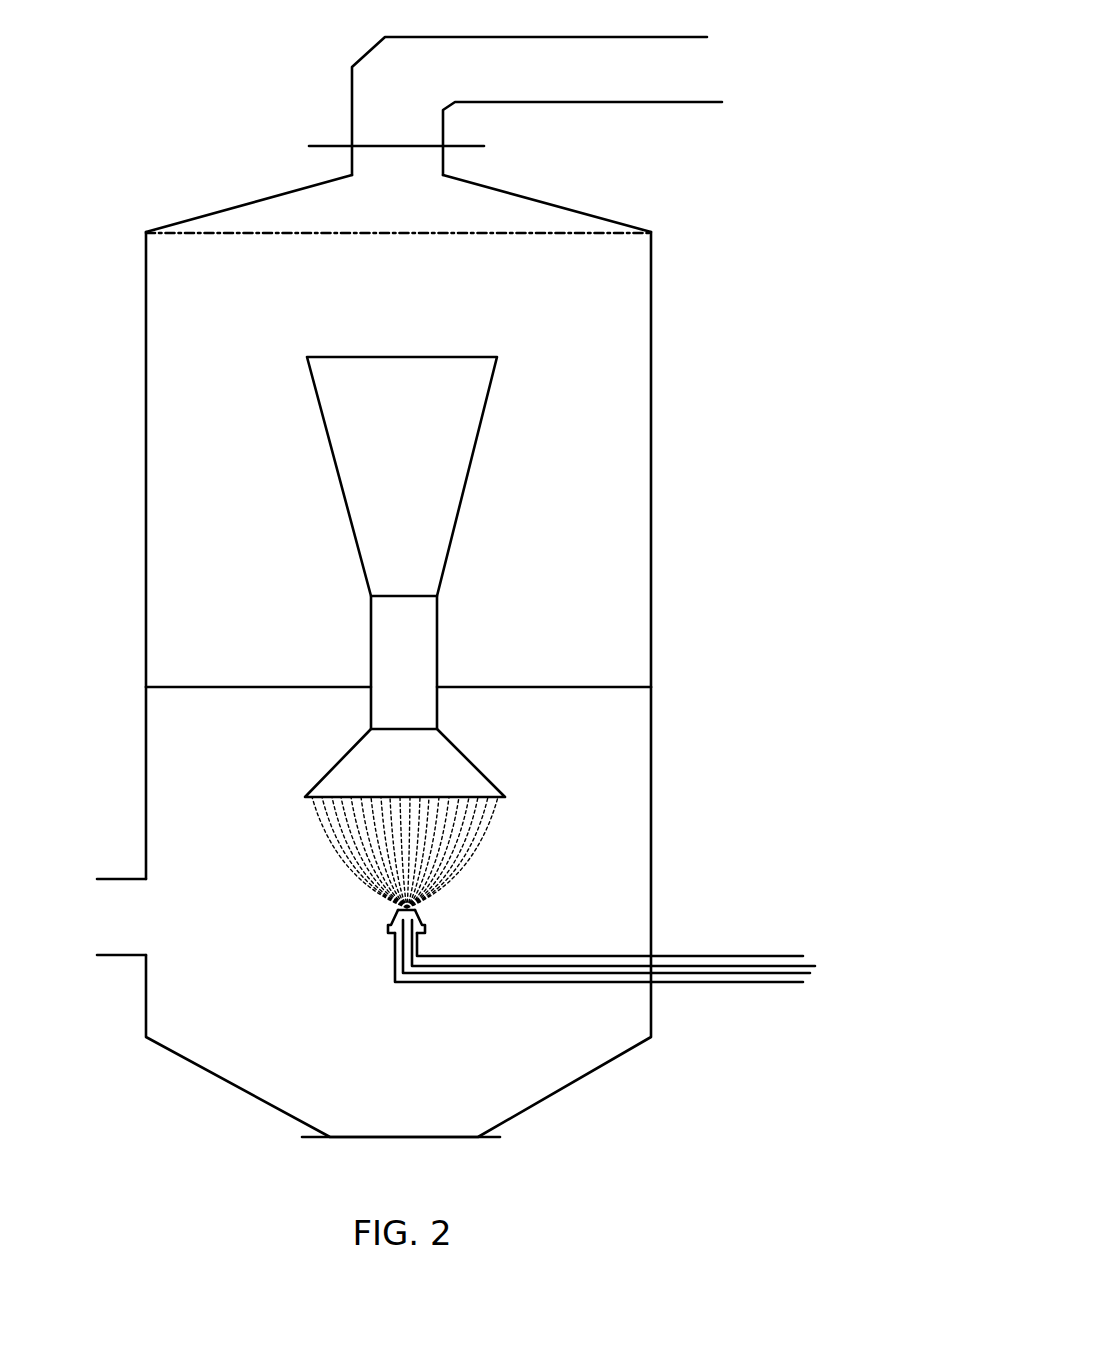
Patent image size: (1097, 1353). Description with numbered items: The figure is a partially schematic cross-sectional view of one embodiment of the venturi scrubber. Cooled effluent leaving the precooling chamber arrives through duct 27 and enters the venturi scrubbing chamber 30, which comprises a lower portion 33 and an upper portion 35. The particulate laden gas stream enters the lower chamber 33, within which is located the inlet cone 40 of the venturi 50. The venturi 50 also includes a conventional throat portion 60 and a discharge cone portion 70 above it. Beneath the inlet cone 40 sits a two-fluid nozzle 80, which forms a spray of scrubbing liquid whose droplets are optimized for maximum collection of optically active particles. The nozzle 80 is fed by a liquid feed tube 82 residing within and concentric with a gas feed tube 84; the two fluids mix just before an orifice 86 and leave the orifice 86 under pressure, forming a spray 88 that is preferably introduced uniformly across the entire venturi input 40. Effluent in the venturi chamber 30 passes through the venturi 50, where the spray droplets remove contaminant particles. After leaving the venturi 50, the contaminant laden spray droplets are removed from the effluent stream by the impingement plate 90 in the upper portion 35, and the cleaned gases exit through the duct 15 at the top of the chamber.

The duct 15 is at (570, 85).
The duct 27 is at (108, 924).
The venturi scrubbing chamber 30 is at (474, 656).
The lower portion 33 is at (618, 813).
The upper portion 35 is at (624, 310).
The inlet cone 40 is at (350, 769).
The venturi 50 is at (412, 577).
The throat portion 60 is at (407, 640).
The discharge cone portion 70 is at (465, 401).
The two-fluid nozzle 80 is at (410, 938).
The liquid feed tube 82 is at (815, 966).
The gas feed tube 84 is at (785, 983).
The orifice 86 is at (417, 908).
The spray 88 is at (348, 885).
The impingement plate 90 is at (383, 233).